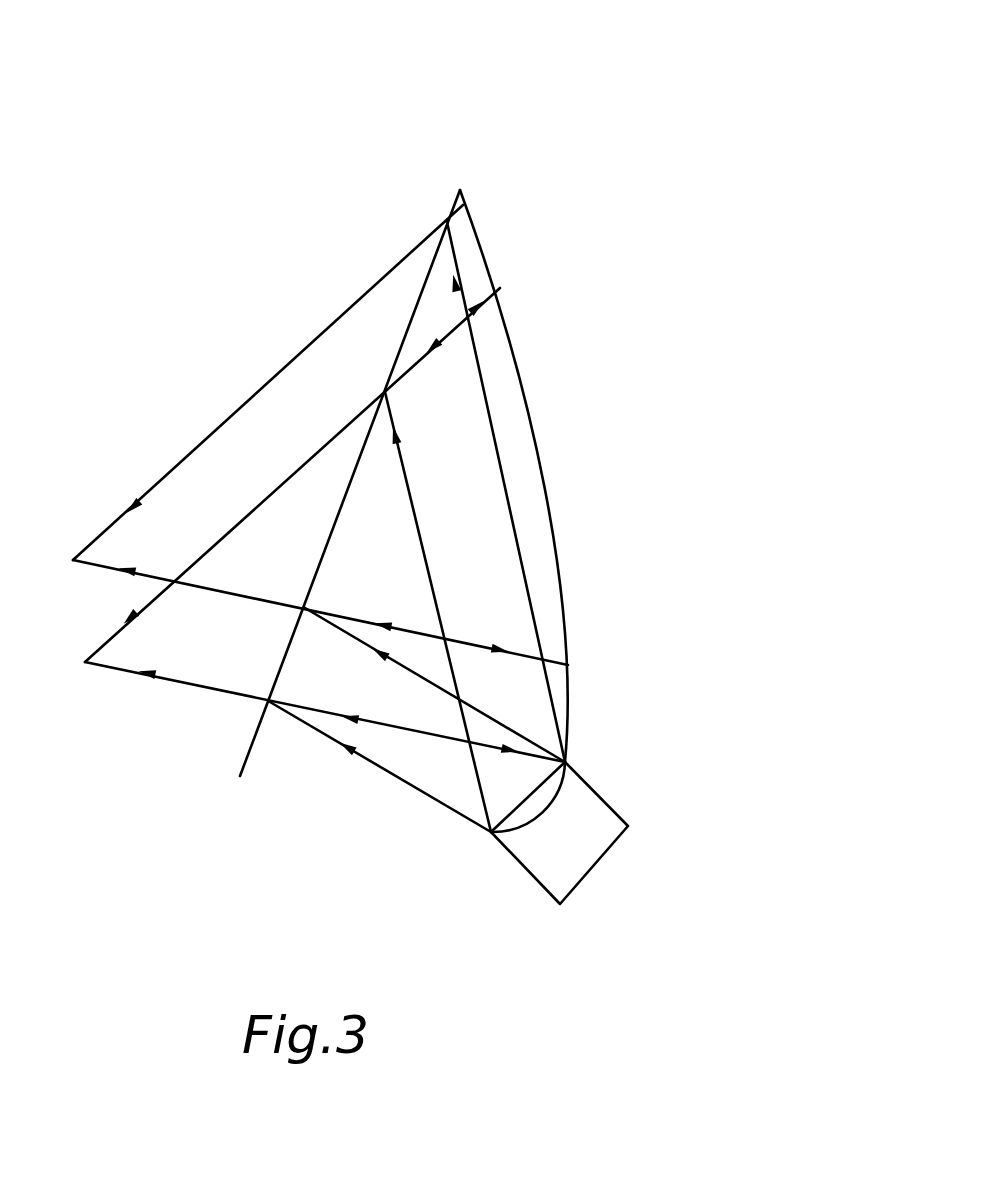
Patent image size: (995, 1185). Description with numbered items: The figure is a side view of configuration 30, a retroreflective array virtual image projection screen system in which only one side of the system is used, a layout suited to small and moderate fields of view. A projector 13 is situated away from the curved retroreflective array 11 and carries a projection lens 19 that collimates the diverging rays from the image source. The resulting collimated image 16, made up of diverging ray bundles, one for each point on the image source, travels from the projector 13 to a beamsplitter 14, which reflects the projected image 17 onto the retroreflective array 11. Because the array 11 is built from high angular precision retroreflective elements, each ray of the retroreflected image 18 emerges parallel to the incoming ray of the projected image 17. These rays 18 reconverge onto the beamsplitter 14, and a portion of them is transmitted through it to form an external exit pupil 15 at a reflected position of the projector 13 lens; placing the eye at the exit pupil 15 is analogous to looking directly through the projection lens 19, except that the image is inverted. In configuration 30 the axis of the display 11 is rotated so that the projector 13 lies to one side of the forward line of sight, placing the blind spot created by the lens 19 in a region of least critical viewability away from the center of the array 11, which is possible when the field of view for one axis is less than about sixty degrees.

The configuration 30 is at (503, 108).
The retroreflective array 11 is at (545, 445).
The projector 13 is at (537, 873).
The beamsplitter 14 is at (343, 502).
The exit pupil 15 is at (72, 652).
The collimated image 16 is at (342, 742).
The projected image 17 is at (512, 752).
The retroreflected image 18 is at (152, 674).
The projection lens 19 is at (488, 834).